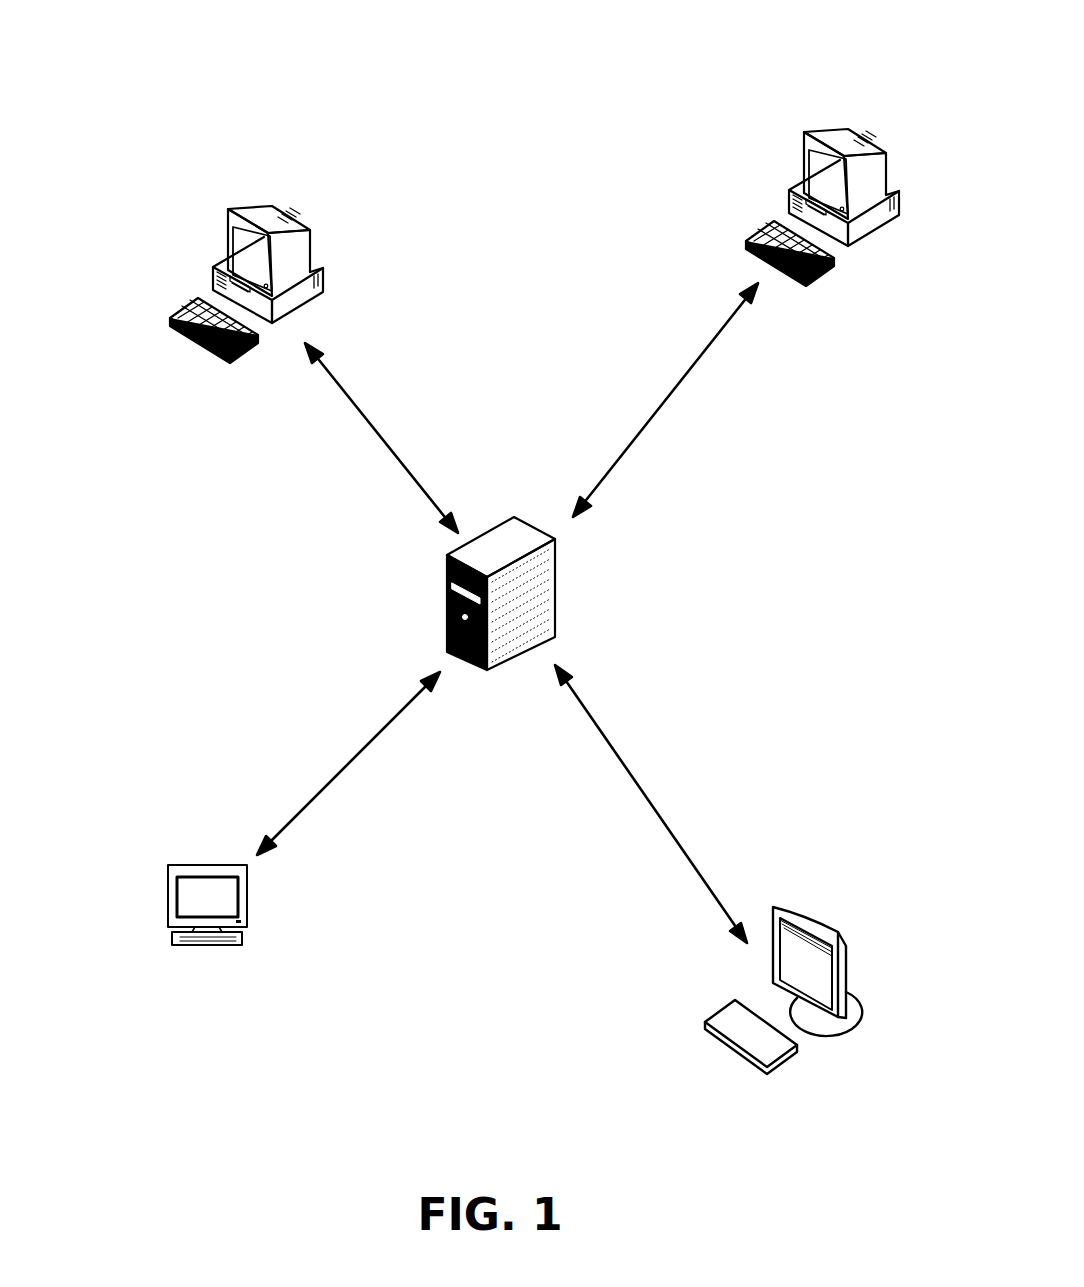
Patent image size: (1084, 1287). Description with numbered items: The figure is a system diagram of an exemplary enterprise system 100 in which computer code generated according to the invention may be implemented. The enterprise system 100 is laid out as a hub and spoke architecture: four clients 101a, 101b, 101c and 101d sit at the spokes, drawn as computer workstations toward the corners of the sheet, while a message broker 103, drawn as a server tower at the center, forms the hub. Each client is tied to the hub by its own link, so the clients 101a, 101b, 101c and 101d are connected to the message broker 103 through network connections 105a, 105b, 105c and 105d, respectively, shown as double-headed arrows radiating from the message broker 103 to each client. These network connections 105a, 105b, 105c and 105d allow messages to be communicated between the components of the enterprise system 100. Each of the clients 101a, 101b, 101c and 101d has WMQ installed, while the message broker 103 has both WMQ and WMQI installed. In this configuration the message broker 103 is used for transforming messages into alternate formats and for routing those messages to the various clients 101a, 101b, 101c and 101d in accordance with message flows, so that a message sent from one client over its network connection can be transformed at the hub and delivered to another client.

The enterprise system 100 is at (575, 81).
The client 101a is at (287, 214).
The client 101b is at (865, 136).
The client 101c is at (813, 912).
The client 101d is at (168, 865).
The message broker 103 is at (513, 517).
The network connection 105a is at (381, 438).
The network connection 105b is at (665, 400).
The network connection 105c is at (651, 804).
The network connection 105d is at (348, 763).